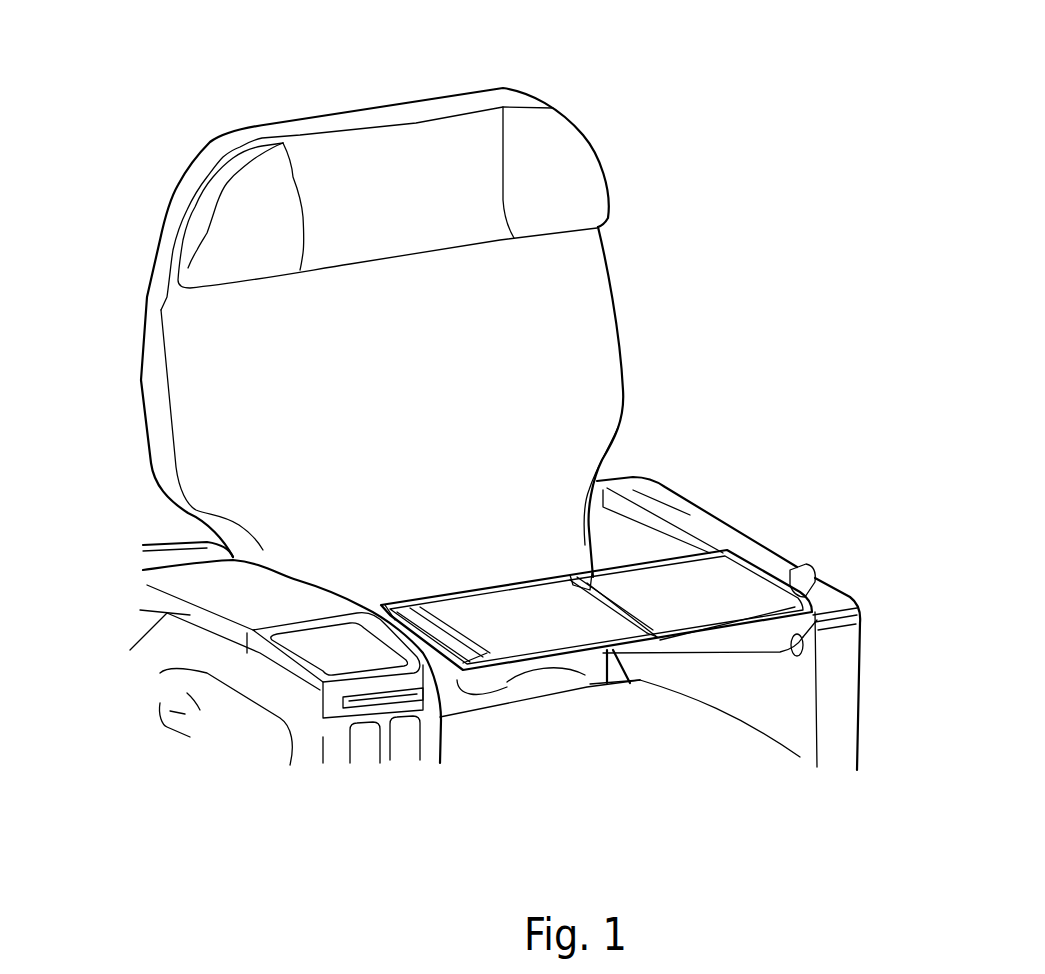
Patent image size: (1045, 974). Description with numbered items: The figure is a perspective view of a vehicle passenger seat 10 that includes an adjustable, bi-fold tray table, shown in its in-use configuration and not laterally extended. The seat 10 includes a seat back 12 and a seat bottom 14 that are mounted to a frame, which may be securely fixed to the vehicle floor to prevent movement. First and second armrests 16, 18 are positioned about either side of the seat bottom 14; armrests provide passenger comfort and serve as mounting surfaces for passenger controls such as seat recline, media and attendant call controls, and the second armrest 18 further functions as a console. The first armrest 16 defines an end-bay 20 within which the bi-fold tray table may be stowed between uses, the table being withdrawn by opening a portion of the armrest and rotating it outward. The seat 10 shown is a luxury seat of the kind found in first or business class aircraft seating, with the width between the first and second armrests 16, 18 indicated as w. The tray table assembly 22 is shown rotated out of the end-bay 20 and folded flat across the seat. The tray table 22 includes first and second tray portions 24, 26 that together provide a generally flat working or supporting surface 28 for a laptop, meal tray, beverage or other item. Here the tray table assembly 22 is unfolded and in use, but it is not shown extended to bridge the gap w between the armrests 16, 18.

The vehicle passenger seat 10 is at (456, 97).
The seat back 12 is at (583, 308).
The seat bottom 14 is at (477, 740).
The first armrest 16 is at (692, 527).
The second armrest 18 is at (167, 617).
The end-bay 20 is at (628, 545).
The tray table assembly 22 is at (587, 683).
The first tray portion 24 is at (717, 607).
The second tray portion 26 is at (520, 640).
The supporting surface 28 is at (680, 620).